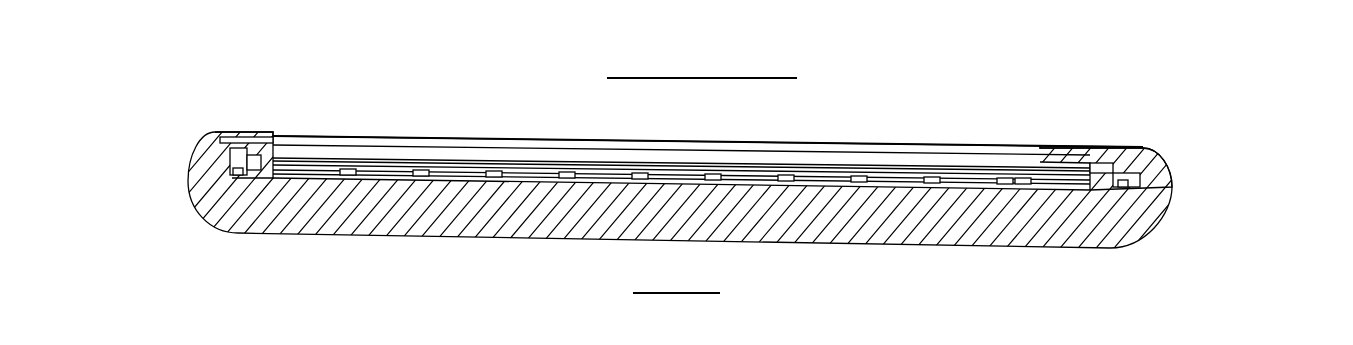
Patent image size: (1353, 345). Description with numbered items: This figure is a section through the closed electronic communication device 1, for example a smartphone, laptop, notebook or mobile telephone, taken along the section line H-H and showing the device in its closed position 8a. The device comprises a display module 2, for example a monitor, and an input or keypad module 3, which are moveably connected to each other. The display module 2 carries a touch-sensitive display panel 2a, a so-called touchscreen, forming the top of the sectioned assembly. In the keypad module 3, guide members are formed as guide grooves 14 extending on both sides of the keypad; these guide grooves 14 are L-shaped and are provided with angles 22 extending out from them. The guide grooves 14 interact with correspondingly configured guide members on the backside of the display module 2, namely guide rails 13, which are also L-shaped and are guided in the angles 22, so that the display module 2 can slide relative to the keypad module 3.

The electronic communication device 1 is at (218, 110).
The display module 2 is at (292, 150).
The touch-sensitive display panel 2a is at (461, 137).
The keypad module 3 is at (1107, 226).
The closed position 8a is at (1221, 101).
The guide rails 13 is at (205, 137).
The guide grooves 14 is at (227, 172).
The angles 22 is at (233, 162).